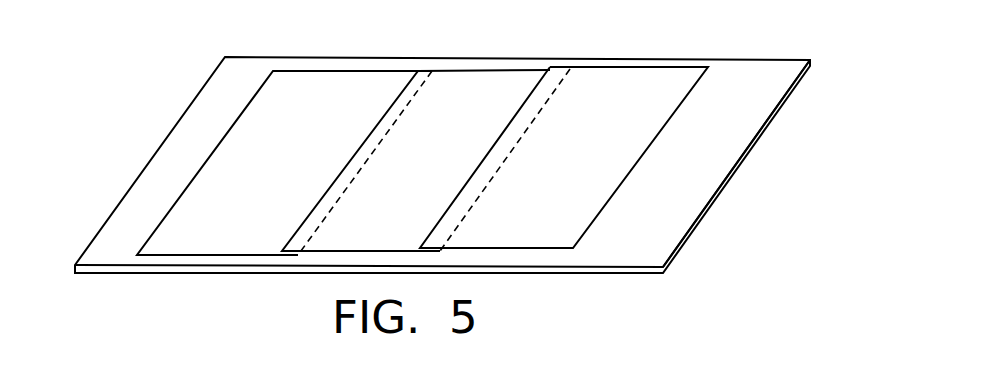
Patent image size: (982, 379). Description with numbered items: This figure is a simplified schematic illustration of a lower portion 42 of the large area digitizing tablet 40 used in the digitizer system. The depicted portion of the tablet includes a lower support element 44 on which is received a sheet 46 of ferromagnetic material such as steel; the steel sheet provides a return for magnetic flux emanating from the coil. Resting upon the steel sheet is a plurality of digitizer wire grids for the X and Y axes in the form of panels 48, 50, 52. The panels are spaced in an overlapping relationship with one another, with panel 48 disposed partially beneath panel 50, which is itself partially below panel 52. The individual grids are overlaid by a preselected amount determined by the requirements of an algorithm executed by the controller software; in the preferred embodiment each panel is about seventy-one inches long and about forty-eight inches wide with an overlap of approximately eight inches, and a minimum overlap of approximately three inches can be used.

The digitizing tablet 40 is at (138, 150).
The lower portion 42 is at (754, 55).
The lower support element 44 is at (617, 275).
The sheet of ferromagnetic material 46 is at (662, 219).
The panel 48 is at (331, 87).
The panel 50 is at (473, 82).
The panel 52 is at (623, 80).